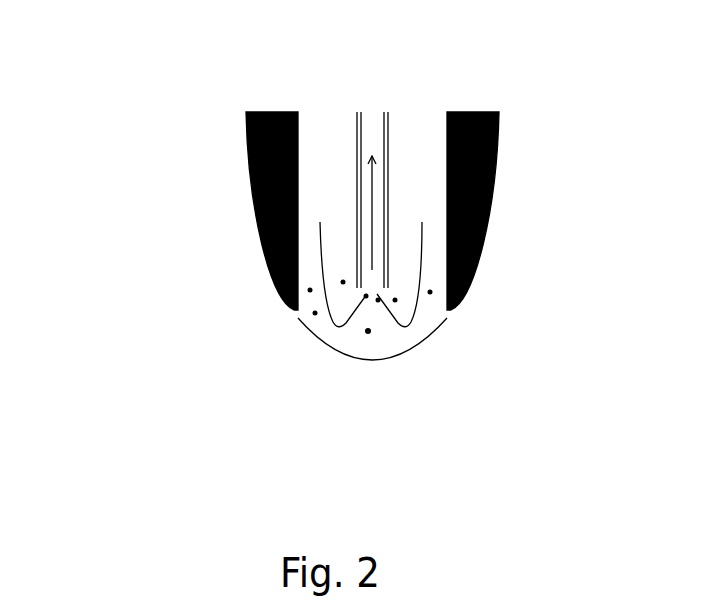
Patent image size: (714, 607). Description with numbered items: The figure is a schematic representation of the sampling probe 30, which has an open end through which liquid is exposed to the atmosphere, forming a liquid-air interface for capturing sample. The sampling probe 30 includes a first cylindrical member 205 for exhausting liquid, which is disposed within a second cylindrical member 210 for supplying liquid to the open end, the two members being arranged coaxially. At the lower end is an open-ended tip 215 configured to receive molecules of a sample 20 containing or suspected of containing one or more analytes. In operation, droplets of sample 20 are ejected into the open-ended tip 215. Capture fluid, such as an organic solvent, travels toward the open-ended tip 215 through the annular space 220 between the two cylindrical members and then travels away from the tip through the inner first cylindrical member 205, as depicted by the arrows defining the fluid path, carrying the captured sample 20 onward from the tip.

The sampling probe 30 is at (324, 214).
The first cylindrical member 205 is at (350, 167).
The annular space 220 is at (417, 117).
The second cylindrical member 210 is at (490, 212).
The open-ended tip 215 is at (440, 325).
The sample 20 is at (368, 330).